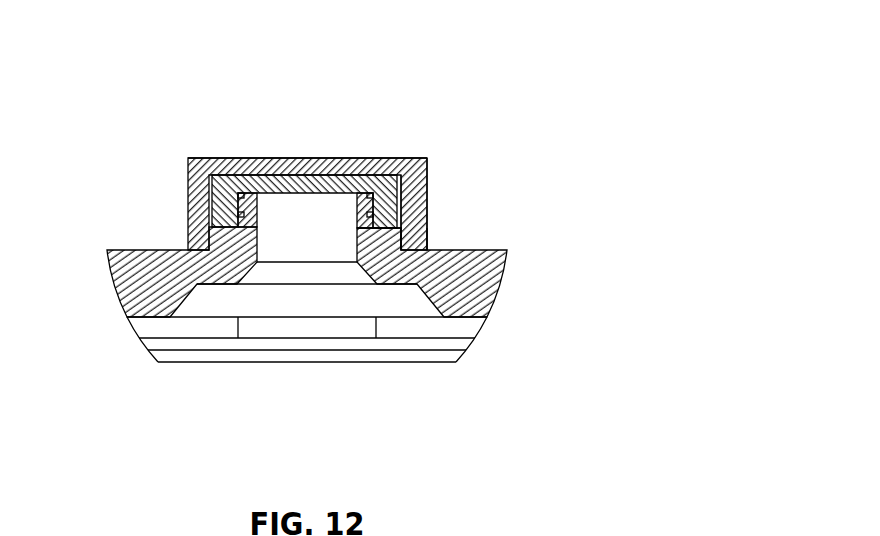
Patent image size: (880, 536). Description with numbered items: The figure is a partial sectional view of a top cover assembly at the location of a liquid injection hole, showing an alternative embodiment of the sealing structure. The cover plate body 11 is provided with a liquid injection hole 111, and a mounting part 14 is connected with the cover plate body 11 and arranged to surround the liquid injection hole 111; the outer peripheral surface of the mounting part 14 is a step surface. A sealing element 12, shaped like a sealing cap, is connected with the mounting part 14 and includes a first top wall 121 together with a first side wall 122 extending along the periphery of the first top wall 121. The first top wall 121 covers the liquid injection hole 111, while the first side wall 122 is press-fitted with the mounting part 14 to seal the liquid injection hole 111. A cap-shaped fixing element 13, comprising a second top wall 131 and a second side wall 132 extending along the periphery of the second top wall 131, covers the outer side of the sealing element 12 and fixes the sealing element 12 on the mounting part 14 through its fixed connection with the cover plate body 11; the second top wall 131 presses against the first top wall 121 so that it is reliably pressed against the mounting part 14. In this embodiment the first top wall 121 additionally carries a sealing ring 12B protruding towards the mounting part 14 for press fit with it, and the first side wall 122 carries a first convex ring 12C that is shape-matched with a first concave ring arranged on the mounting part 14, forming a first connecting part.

The cover plate body 11 is at (137, 251).
The liquid injection hole 111 is at (295, 271).
The first side wall 122 is at (130, 318).
The sealing element 12 is at (385, 180).
The first top wall 121 is at (285, 182).
The sealing ring 12B is at (246, 193).
The first convex ring 12C is at (372, 215).
The fixing element 13 is at (424, 209).
The second top wall 131 is at (410, 157).
The second side wall 132 is at (421, 237).
The mounting part 14 is at (370, 230).